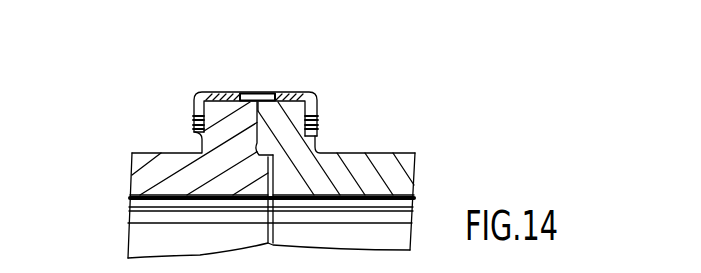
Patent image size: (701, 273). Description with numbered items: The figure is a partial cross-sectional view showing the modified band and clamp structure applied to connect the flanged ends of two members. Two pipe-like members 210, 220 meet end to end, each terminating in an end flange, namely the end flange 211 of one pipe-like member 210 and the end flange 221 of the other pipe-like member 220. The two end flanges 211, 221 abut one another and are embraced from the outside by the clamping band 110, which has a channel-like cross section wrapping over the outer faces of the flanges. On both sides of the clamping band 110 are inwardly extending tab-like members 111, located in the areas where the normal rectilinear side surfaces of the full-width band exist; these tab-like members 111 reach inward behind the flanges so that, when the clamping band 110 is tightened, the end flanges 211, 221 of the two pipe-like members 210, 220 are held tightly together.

The clamping band 110 is at (266, 69).
The inwardly extending tab-like members 111 is at (193, 124).
The pipe-like member 210 is at (395, 180).
The end flange 211 is at (281, 121).
The pipe-like member 220 is at (140, 178).
The end flange 221 is at (226, 117).